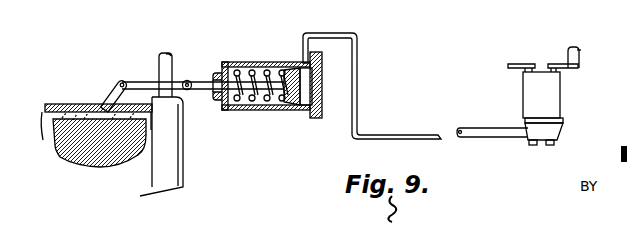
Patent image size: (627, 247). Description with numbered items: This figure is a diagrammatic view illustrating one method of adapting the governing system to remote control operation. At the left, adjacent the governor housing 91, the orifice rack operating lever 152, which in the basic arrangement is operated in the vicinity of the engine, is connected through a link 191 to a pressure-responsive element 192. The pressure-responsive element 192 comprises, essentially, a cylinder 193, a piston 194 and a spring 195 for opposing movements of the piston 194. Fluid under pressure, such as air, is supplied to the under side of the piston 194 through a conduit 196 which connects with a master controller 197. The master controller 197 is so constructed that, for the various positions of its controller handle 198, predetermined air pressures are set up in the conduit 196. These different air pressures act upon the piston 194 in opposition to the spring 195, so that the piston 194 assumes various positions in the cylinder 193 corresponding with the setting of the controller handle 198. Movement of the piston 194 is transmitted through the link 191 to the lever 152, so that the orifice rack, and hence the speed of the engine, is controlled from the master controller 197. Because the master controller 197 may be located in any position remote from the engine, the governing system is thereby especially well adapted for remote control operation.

The governor housing 91 is at (183, 165).
The orifice rack operating lever 152 is at (113, 84).
The link 191 is at (146, 86).
The pressure-responsive element 192 is at (266, 61).
The cylinder 193 is at (306, 91).
The piston 194 is at (290, 100).
The spring 195 is at (243, 102).
The conduit 196 is at (357, 88).
The master controller 197 is at (522, 97).
The controller handle 198 is at (580, 50).